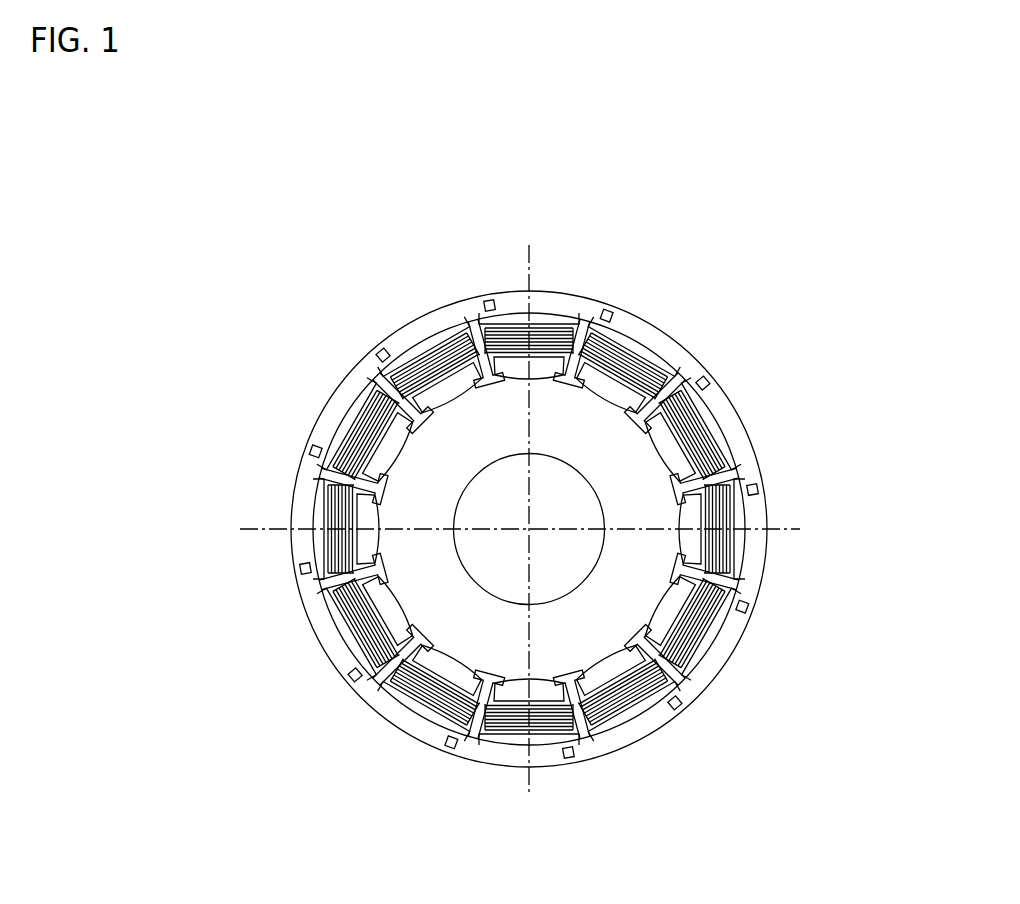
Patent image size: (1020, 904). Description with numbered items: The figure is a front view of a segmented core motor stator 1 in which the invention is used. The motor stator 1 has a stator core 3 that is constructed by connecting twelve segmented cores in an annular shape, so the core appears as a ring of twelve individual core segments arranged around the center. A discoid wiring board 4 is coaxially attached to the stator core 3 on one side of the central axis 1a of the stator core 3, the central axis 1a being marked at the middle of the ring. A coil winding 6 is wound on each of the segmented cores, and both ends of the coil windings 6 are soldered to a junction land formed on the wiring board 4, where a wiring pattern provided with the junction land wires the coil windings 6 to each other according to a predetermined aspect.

The motor stator 1 is at (702, 267).
The central axis 1a is at (529, 529).
The stator core 3 is at (357, 367).
The wiring board 4 is at (587, 627).
The coil winding 6 is at (643, 372).